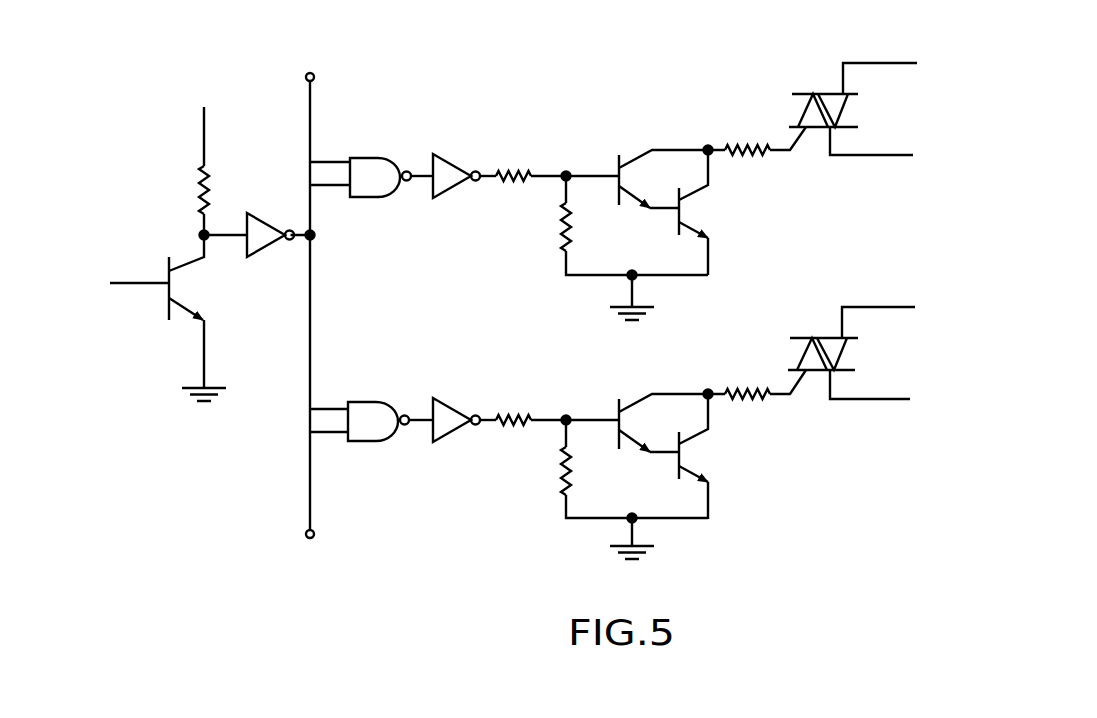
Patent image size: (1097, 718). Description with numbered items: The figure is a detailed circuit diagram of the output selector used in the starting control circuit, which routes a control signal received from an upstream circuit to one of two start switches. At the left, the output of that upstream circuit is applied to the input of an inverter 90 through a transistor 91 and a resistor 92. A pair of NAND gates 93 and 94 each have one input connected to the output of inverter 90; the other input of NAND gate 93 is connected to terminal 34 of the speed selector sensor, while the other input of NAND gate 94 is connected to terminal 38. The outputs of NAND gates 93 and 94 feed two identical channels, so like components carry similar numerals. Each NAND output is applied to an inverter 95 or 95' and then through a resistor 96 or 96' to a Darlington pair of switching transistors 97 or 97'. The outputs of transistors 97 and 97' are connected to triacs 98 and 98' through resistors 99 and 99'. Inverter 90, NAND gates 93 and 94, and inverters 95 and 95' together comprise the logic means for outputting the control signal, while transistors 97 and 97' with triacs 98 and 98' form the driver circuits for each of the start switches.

The terminal 34 is at (314, 73).
The terminal 38 is at (314, 530).
The inverter 90 is at (262, 218).
The transistor 91 is at (166, 309).
The resistor 92 is at (199, 194).
The NAND gate 93 is at (377, 157).
The NAND gate 94 is at (374, 398).
The inverter 95 is at (464, 163).
The inverter 95' is at (464, 442).
The resistor 96 is at (557, 157).
The resistor 96' is at (557, 445).
The Darlington pair of switching transistors 97 is at (637, 214).
The Darlington pair of switching transistors 97' is at (641, 457).
The triac 98 is at (844, 105).
The triac 98' is at (851, 345).
The resistor 99 is at (757, 131).
The resistor 99' is at (757, 406).